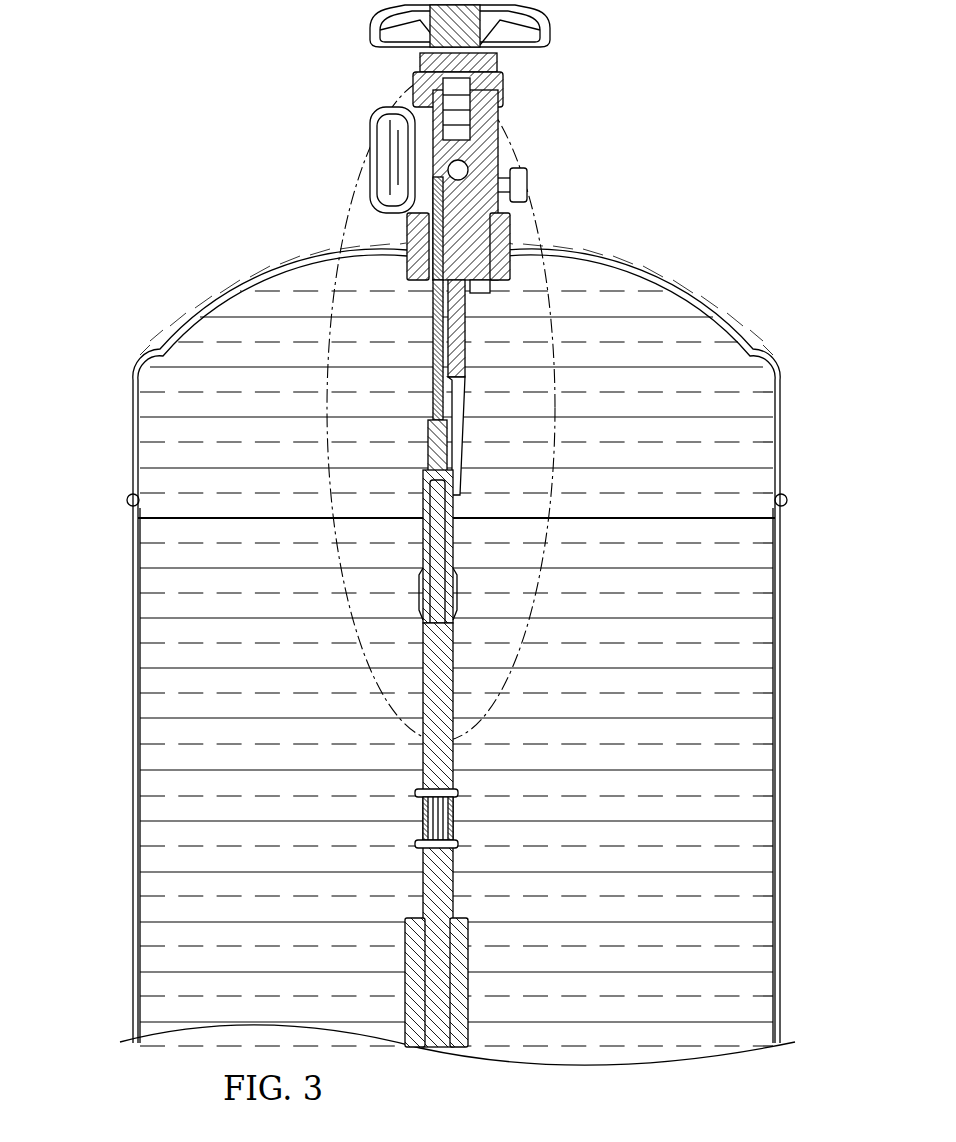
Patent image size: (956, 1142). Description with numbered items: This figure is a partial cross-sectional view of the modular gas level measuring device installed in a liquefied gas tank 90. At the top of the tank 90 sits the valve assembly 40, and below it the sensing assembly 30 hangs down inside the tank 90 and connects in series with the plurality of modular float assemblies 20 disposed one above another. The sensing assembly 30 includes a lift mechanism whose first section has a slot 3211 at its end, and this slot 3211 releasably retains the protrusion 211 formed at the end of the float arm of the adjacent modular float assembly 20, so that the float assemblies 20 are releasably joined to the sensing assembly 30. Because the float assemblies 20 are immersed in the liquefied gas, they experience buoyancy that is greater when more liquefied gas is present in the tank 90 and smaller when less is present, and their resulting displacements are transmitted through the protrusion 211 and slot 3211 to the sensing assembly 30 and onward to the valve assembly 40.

The valve assembly 40 is at (350, 96).
The sensing assembly 30 is at (410, 409).
The liquefied gas tank 90 is at (136, 558).
The protrusion 211 is at (416, 803).
The slot 3211 is at (420, 807).
The modular float assembly 20 is at (390, 922).